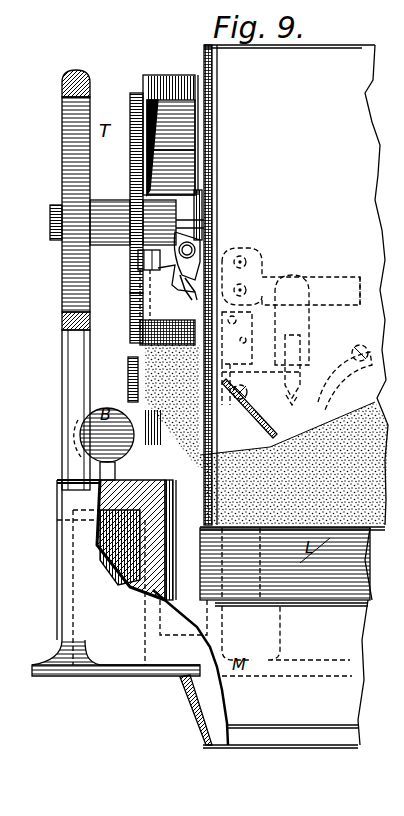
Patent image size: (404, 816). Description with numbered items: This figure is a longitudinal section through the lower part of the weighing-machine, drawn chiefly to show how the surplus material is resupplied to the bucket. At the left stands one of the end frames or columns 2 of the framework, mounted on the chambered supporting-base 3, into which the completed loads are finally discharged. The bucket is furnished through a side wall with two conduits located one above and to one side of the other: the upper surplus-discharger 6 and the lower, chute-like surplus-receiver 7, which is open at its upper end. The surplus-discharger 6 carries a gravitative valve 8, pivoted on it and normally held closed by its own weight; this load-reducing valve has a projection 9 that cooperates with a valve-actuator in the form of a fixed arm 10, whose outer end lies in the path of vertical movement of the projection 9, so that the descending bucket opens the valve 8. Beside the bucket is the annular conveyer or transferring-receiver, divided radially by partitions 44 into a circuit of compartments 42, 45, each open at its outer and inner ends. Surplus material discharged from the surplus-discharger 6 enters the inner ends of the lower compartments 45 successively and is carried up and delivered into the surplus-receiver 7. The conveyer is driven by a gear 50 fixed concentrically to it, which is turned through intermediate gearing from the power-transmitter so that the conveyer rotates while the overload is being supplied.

The end frame or column 2 is at (62, 165).
The chambered supporting-base 3 is at (119, 578).
The surplus-discharger conduit 6 is at (182, 268).
The surplus-receiver conduit 7 is at (128, 367).
The gravitative valve 8 is at (196, 248).
The projection 9 is at (160, 268).
The fixed arm 10 is at (138, 259).
The compartment 42 is at (169, 123).
The partition 44 is at (196, 98).
The compartment 45 is at (196, 120).
The gear 50 is at (130, 303).